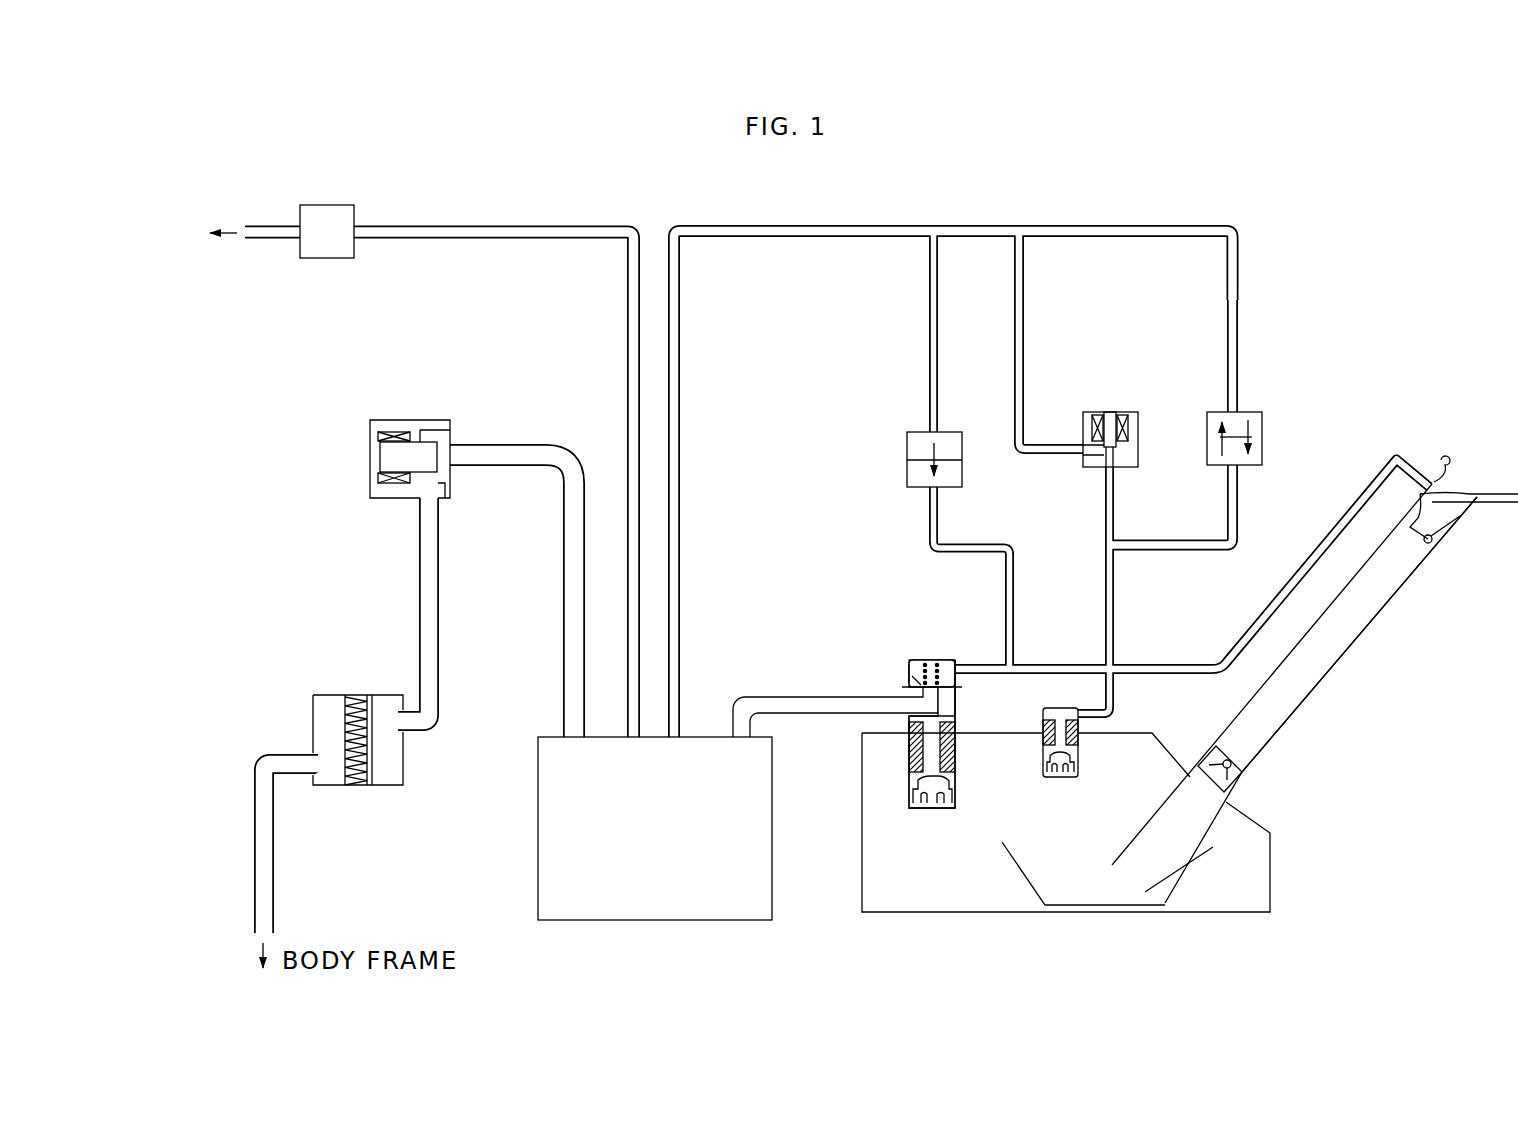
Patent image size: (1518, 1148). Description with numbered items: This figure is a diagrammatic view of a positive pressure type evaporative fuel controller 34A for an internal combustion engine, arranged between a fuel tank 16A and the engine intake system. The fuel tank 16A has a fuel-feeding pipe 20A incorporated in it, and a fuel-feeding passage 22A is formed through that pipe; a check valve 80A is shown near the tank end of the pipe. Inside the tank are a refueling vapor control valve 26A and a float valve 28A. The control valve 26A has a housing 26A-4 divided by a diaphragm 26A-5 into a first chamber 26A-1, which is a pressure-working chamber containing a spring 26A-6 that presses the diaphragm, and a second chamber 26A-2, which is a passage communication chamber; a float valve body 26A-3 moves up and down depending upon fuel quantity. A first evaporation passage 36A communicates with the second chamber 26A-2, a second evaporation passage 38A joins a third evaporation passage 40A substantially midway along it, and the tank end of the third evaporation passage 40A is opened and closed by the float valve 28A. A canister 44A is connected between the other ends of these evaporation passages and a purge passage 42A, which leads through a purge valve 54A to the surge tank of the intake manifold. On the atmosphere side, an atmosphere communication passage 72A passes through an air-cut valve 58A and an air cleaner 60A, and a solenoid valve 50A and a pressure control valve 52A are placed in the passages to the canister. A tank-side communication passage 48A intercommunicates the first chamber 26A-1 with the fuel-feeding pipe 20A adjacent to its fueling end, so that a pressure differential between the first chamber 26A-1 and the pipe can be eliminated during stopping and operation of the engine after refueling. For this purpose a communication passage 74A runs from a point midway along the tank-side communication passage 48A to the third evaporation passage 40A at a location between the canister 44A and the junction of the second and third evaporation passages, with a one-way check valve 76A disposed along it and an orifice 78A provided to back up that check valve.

The evaporative fuel controller 34A is at (1259, 225).
The purge passage 42A is at (520, 218).
The purge valve 54A is at (347, 220).
The air-cut valve 58A is at (435, 422).
The atmosphere communication passage 72A is at (428, 585).
The air cleaner 60A is at (387, 787).
The canister 44A is at (547, 880).
The communication passage 74A is at (928, 287).
The check valve 76A is at (907, 443).
The second evaporation passage 38A is at (1022, 303).
The solenoid valve 50A is at (1112, 413).
The third evaporation passage 40A is at (1238, 292).
The pressure control valve 52A is at (1247, 410).
The tank-side communication passage 48A is at (1317, 547).
The first evaporation passage 36A is at (823, 705).
The refueling vapor control valve 26A is at (933, 774).
The first chamber 26A-1 is at (942, 667).
The second chamber 26A-2 is at (950, 707).
The float valve body 26A-3 is at (933, 807).
The housing 26A-4 is at (953, 660).
The diaphragm 26A-5 is at (910, 673).
The spring 26A-6 is at (923, 670).
The float valve 28A is at (1058, 778).
The orifice 78A is at (1177, 794).
The fuel tank 16A is at (1173, 913).
The fuel-feeding passage 22A is at (1333, 653).
The fuel-feeding pipe 20A is at (1292, 722).
The check valve 80A is at (1245, 790).